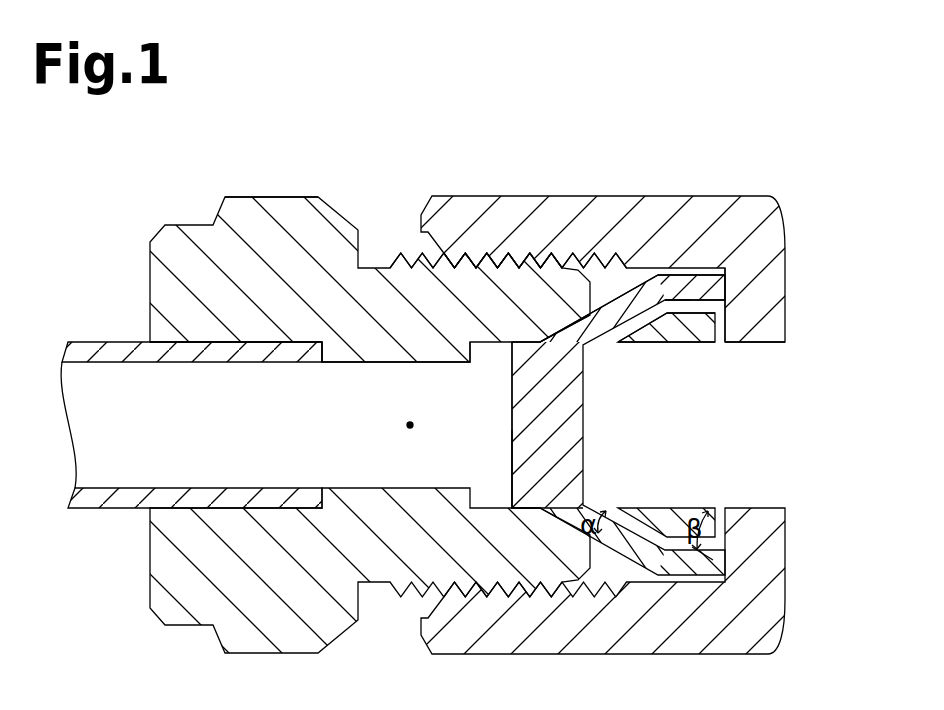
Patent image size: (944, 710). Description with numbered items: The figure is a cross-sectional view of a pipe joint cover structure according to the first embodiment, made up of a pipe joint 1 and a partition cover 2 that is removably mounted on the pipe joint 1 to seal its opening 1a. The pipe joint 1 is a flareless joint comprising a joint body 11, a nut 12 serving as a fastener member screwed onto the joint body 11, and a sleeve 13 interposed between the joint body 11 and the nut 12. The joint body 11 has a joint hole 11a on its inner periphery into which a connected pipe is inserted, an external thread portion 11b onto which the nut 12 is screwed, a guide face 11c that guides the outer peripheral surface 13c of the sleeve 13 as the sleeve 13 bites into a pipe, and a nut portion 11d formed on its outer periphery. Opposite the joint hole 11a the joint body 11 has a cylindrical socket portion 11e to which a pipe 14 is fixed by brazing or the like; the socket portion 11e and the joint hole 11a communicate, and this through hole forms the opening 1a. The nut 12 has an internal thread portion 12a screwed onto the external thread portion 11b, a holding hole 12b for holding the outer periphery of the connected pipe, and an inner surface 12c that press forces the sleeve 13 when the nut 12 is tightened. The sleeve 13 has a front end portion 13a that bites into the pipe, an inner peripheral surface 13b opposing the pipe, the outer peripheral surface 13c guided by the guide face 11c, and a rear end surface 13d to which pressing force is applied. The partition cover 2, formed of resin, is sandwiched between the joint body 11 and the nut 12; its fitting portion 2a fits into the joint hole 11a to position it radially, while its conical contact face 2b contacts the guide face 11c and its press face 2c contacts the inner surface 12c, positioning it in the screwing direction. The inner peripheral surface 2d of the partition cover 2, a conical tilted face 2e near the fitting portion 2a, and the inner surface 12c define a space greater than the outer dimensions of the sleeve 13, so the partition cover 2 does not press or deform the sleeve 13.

The pipe joint 1 is at (105, 222).
The opening 1a is at (408, 427).
The partition cover 2 is at (587, 467).
The fitting portion 2a is at (512, 428).
The contact face 2b is at (588, 330).
The press face 2c is at (738, 272).
The inner peripheral surface 2d is at (712, 303).
The tilted face 2e is at (588, 343).
The joint body 11 is at (195, 225).
The joint hole 11a is at (490, 344).
The external thread portion 11b is at (410, 256).
The guide face 11c is at (582, 304).
The nut portion 11d is at (282, 197).
The socket portion 11e is at (272, 362).
The nut 12 is at (472, 197).
The internal thread portion 12a is at (560, 255).
The holding hole 12b is at (768, 344).
The inner surface 12c is at (725, 344).
The sleeve 13 is at (683, 344).
The front end portion 13a is at (616, 341).
The inner peripheral surface 13b is at (662, 343).
The outer peripheral surface 13c is at (660, 302).
The rear end surface 13d is at (708, 312).
The pipe 14 is at (103, 342).